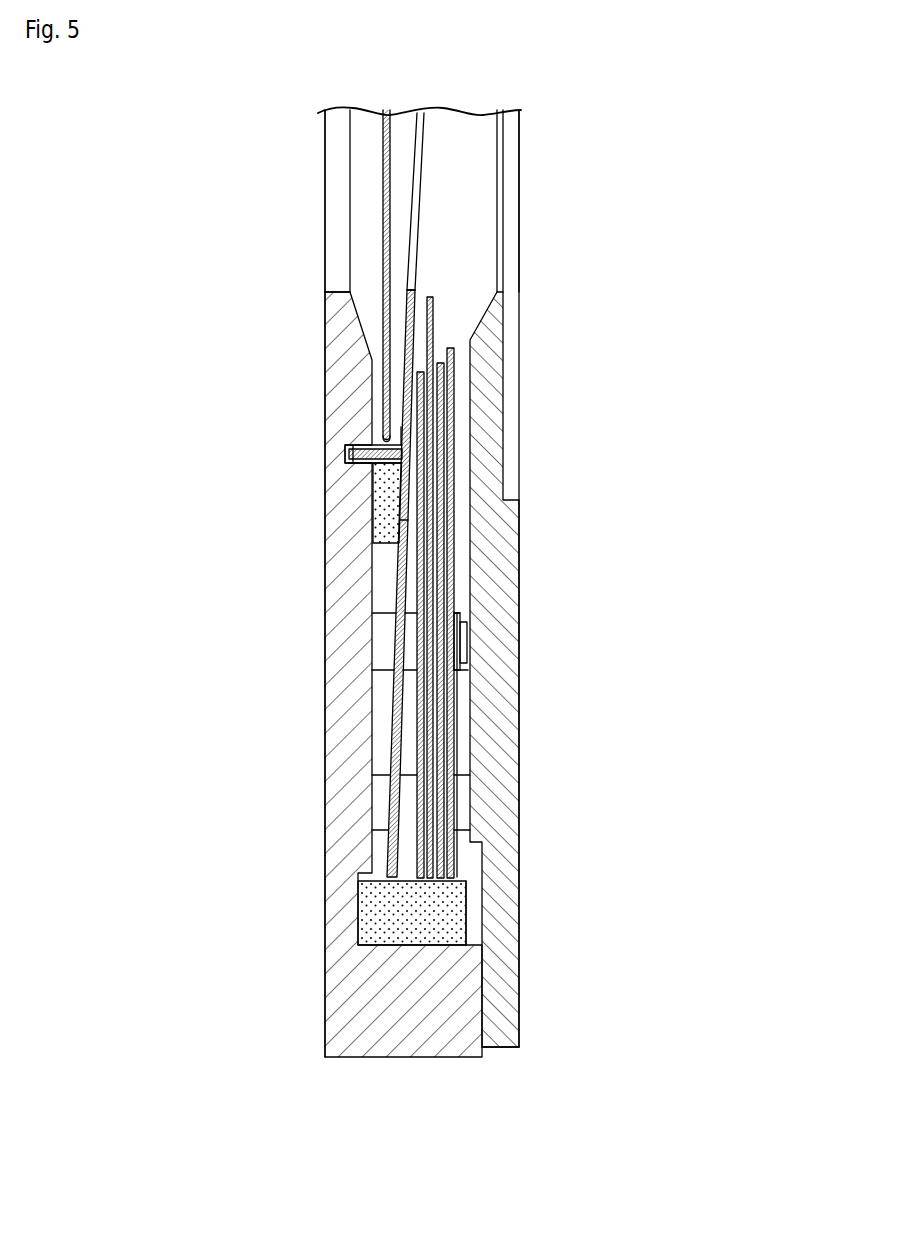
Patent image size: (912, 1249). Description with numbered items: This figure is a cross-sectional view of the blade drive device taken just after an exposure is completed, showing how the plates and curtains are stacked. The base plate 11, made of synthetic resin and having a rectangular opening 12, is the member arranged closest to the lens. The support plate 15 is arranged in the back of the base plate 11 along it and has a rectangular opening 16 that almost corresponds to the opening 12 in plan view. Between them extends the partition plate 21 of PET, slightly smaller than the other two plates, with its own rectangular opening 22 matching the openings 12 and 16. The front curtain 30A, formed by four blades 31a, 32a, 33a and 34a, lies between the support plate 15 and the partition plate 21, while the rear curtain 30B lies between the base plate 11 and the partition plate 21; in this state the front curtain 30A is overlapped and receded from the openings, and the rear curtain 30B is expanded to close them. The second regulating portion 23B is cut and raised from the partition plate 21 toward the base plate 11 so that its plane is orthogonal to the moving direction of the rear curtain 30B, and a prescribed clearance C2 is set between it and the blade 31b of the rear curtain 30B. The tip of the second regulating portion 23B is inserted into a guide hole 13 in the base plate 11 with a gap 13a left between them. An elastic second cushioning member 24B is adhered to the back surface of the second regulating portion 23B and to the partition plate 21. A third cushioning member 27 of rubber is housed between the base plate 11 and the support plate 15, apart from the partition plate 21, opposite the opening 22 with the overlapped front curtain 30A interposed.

The base plate 11 is at (337, 630).
The opening 12 is at (337, 291).
The guide hole 13 is at (347, 457).
The gap 13a is at (360, 465).
The support plate 15 is at (505, 520).
The opening 16 is at (497, 292).
The partition plate 21 is at (393, 715).
The opening 22 is at (409, 287).
The second regulating portion 23B is at (400, 447).
The second cushioning member 24B is at (377, 510).
The third cushioning member 27 is at (365, 916).
The front curtain 30A is at (538, 587).
The rear curtain 30B is at (282, 276).
The blade 31a is at (598, 817).
The blade 31b is at (390, 332).
The blade 32a is at (442, 708).
The blade 33a is at (432, 728).
The blade 34a is at (422, 760).
The clearance C2 is at (382, 440).